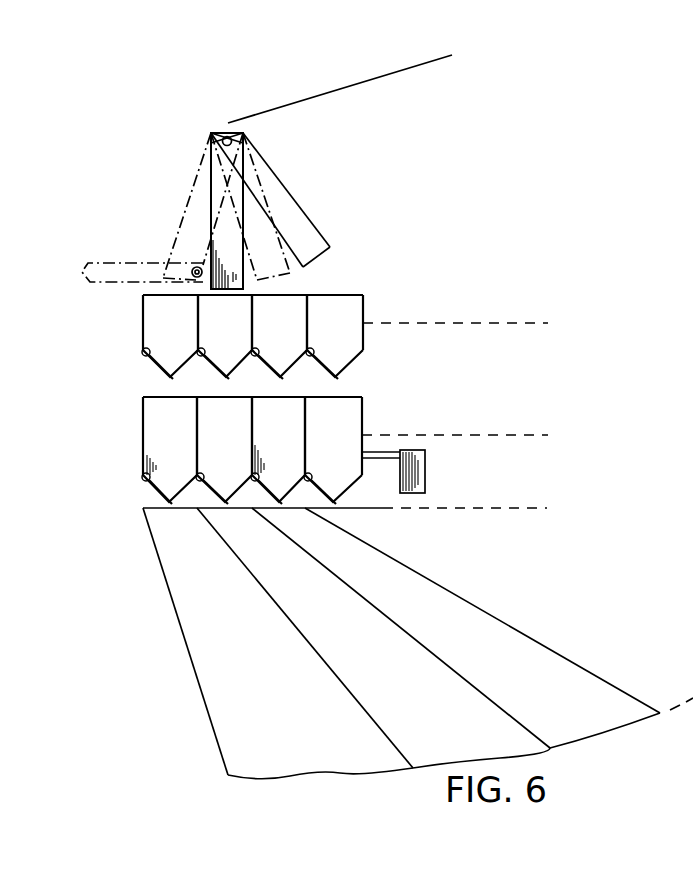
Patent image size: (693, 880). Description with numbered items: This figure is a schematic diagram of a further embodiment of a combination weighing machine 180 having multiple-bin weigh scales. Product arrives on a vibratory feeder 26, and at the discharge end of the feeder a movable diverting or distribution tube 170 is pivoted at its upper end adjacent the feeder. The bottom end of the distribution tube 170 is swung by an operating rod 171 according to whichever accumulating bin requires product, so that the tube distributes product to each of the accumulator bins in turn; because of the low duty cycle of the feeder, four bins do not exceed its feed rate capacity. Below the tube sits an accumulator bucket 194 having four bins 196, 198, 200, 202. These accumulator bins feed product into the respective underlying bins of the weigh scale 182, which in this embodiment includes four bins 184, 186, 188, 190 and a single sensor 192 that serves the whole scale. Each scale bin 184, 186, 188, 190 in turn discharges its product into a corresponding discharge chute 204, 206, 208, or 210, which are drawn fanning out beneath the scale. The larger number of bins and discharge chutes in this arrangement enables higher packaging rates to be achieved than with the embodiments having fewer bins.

The vibratory feeder 26 is at (327, 94).
The diverting tube 170 is at (210, 174).
The operating rod 171 is at (136, 262).
The combination weighing machine 180 is at (484, 192).
The weigh scales 182 is at (372, 402).
The bin 184 is at (153, 443).
The bin 186 is at (207, 443).
The bin 188 is at (261, 443).
The bin 190 is at (315, 443).
The sensor 192 is at (425, 473).
The accumulator bucket 194 is at (372, 301).
The bin 196 is at (151, 334).
The bin 198 is at (205, 334).
The bin 200 is at (261, 334).
The bin 202 is at (316, 334).
The discharge chute 204 is at (200, 680).
The discharge chute 206 is at (309, 639).
The discharge chute 208 is at (365, 599).
The discharge chute 210 is at (378, 549).